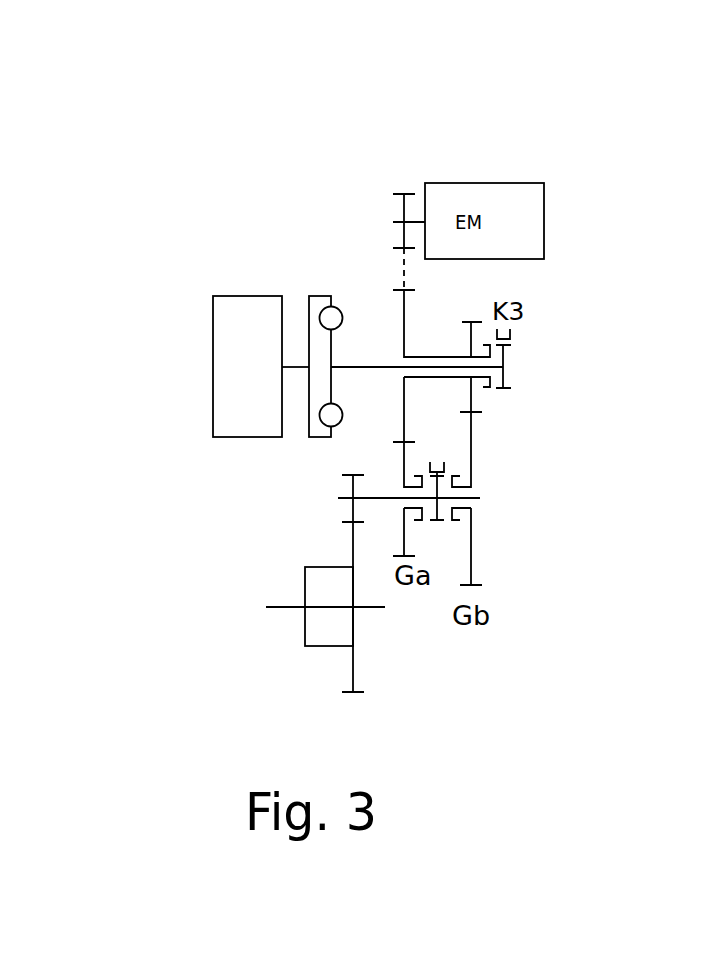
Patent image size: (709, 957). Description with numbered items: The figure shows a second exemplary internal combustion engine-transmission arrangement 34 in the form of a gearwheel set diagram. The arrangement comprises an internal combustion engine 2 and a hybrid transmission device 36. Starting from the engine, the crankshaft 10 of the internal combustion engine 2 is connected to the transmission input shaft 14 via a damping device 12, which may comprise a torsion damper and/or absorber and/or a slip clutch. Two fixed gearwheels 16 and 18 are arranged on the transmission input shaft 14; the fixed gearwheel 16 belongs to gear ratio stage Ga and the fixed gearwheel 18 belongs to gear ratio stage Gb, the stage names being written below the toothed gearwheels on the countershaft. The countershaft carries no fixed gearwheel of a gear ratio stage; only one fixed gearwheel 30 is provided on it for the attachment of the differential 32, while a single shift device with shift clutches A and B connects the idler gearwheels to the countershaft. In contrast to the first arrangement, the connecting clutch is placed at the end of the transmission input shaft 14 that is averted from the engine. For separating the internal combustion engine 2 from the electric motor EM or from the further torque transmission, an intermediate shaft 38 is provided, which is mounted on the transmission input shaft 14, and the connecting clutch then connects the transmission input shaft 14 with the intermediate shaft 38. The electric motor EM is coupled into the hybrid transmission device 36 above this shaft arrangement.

The internal combustion engine 2 is at (213, 305).
The crankshaft 10 is at (285, 380).
The damping device 12 is at (323, 295).
The transmission input shaft 14 is at (363, 366).
The fixed gearwheel 16 is at (405, 310).
The fixed gearwheel 18 is at (467, 327).
The fixed gearwheel 30 is at (358, 526).
The differential 32 is at (318, 627).
The internal combustion engine-transmission arrangement 34 is at (590, 130).
The hybrid transmission device 36 is at (325, 184).
The intermediate shaft 38 is at (444, 379).